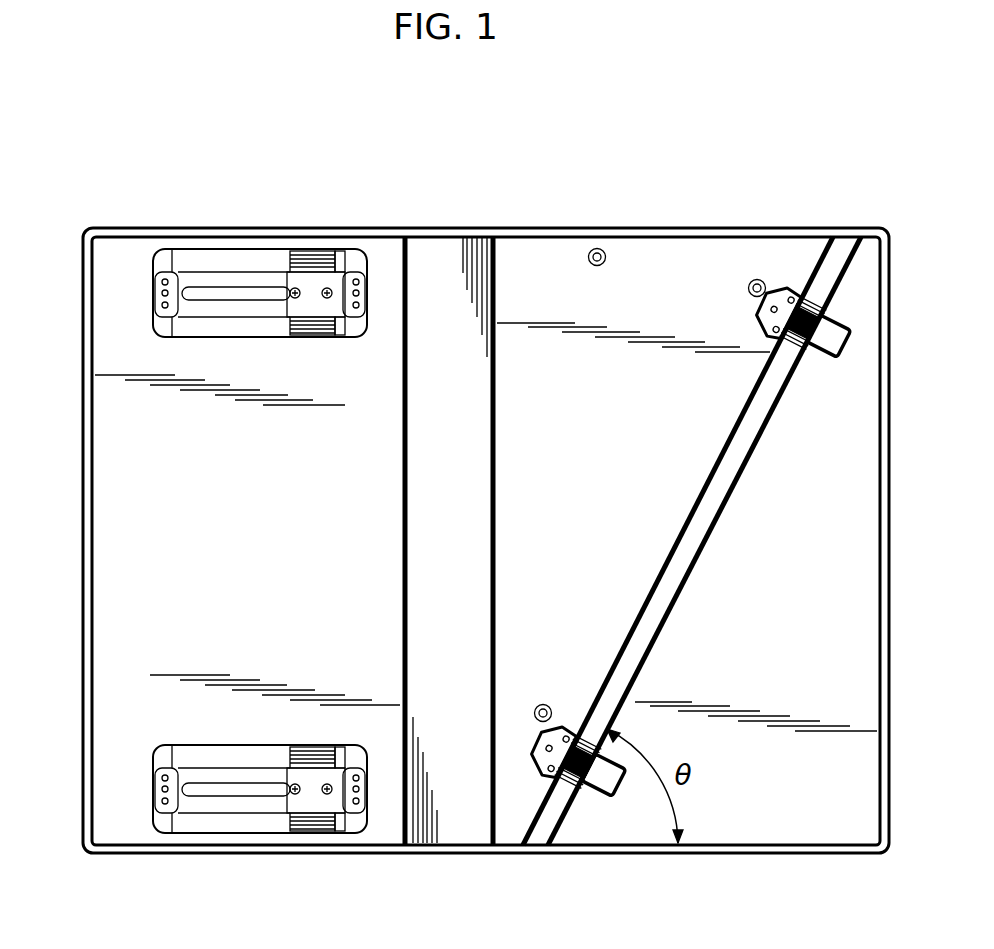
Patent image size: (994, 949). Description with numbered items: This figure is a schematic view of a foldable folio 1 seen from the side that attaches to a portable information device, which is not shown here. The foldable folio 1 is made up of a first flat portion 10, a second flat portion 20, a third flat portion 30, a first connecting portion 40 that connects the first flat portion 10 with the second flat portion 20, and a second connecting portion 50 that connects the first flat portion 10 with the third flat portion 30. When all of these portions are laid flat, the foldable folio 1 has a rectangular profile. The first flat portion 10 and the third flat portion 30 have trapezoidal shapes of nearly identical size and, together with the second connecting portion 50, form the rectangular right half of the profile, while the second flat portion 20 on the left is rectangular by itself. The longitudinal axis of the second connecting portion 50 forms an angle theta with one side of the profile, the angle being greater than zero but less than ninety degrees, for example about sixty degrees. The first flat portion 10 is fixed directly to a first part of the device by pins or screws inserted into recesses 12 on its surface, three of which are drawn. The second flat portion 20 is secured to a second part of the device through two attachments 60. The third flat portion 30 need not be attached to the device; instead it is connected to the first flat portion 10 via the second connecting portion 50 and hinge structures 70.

The foldable folio 1 is at (828, 228).
The first flat portion 10 is at (532, 262).
The recesses 12 is at (600, 247).
The second flat portion 20 is at (135, 587).
The third flat portion 30 is at (827, 610).
The first connecting portion 40 is at (455, 818).
The second connecting portion 50 is at (536, 830).
The attachments 60 is at (240, 248).
The hinge structures 70 is at (822, 318).